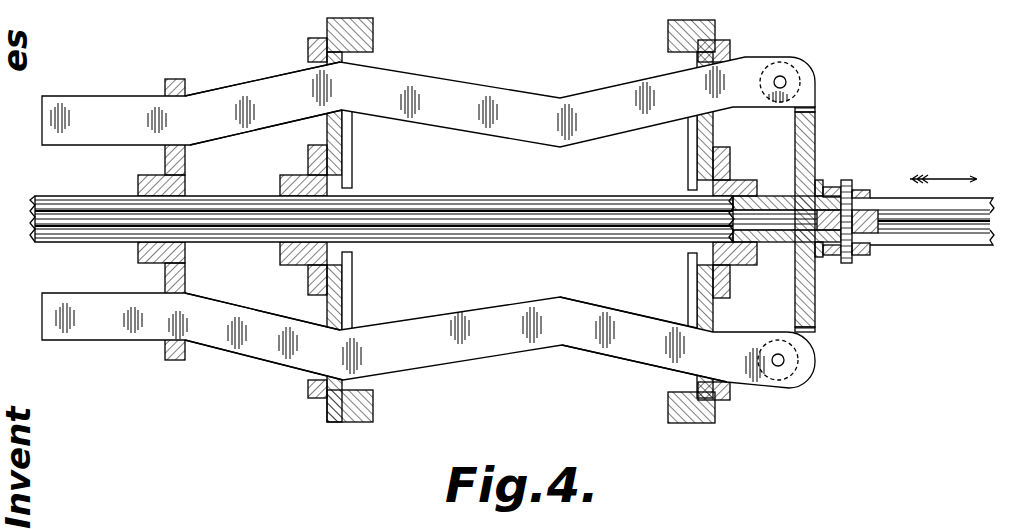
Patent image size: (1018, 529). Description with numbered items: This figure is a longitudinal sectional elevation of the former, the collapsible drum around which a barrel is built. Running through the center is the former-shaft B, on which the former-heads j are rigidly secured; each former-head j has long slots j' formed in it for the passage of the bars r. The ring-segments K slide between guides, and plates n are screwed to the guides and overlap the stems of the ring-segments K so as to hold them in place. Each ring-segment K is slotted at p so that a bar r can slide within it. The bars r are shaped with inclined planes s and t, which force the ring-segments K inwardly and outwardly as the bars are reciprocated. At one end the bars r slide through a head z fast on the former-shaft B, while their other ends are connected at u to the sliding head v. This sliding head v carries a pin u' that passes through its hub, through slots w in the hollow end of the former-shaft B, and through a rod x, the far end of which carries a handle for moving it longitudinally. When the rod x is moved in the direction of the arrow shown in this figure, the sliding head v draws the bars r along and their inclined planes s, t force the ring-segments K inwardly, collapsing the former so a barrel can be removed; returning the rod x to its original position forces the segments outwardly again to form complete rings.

The ring-segments K is at (373, 32).
The bars r is at (527, 90).
The connection of bars to sliding head u is at (804, 221).
The pin u' is at (860, 196).
The slots w is at (933, 222).
The rod x is at (947, 237).
The former-shaft B is at (618, 196).
The former-heads j is at (289, 230).
The long slots j' is at (553, 220).
The plates n is at (352, 160).
The slot in ring-segment p is at (345, 330).
The head z is at (186, 264).
The sliding head v is at (815, 297).
The inclined plane s is at (250, 312).
The inclined plane t is at (262, 355).